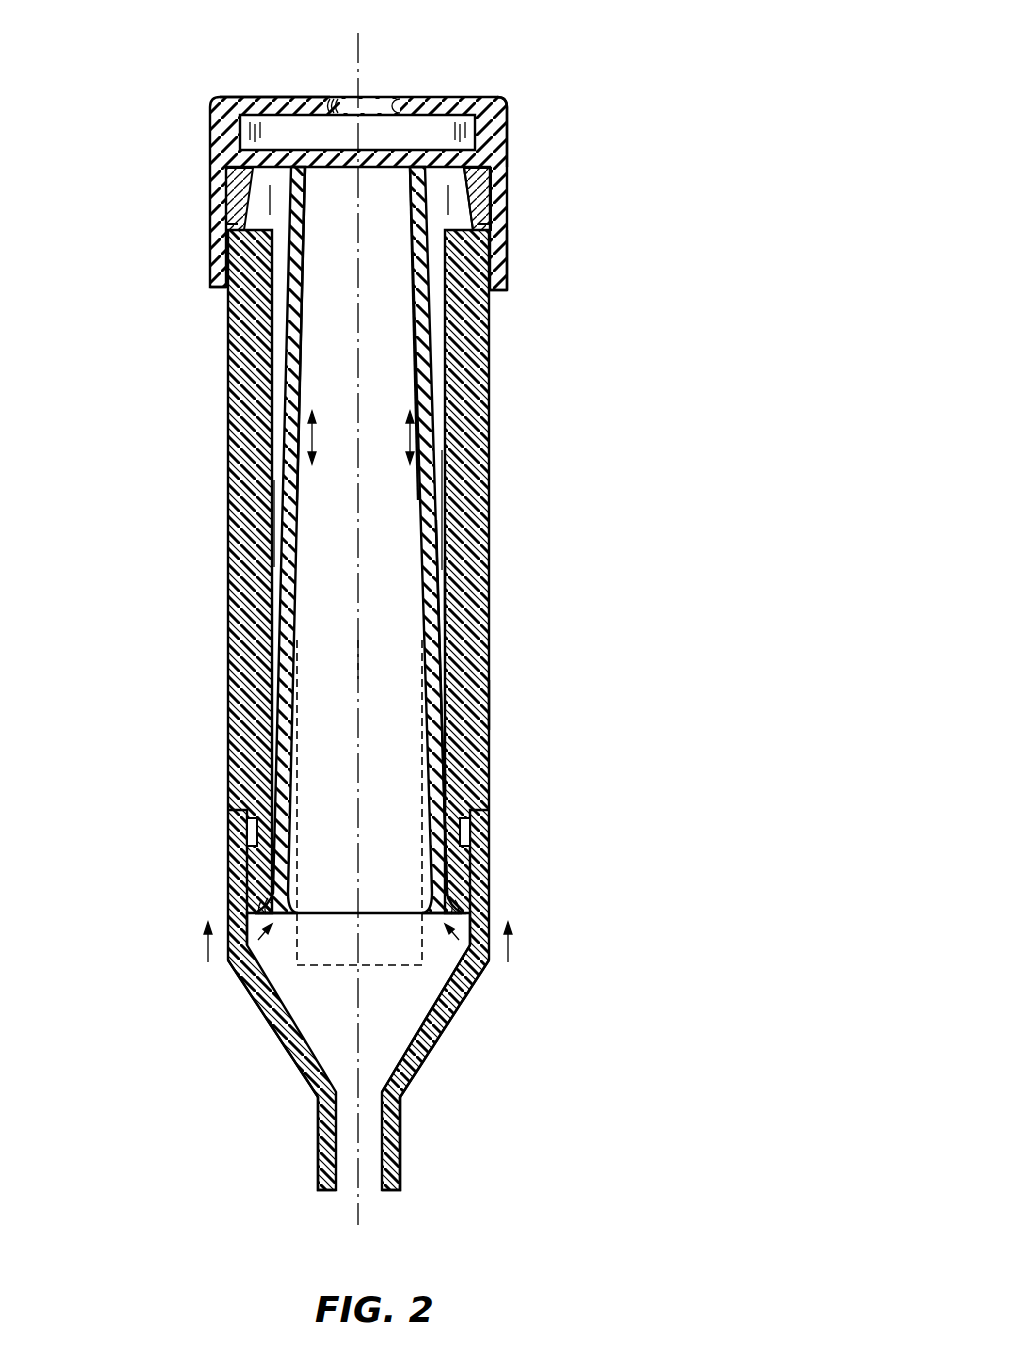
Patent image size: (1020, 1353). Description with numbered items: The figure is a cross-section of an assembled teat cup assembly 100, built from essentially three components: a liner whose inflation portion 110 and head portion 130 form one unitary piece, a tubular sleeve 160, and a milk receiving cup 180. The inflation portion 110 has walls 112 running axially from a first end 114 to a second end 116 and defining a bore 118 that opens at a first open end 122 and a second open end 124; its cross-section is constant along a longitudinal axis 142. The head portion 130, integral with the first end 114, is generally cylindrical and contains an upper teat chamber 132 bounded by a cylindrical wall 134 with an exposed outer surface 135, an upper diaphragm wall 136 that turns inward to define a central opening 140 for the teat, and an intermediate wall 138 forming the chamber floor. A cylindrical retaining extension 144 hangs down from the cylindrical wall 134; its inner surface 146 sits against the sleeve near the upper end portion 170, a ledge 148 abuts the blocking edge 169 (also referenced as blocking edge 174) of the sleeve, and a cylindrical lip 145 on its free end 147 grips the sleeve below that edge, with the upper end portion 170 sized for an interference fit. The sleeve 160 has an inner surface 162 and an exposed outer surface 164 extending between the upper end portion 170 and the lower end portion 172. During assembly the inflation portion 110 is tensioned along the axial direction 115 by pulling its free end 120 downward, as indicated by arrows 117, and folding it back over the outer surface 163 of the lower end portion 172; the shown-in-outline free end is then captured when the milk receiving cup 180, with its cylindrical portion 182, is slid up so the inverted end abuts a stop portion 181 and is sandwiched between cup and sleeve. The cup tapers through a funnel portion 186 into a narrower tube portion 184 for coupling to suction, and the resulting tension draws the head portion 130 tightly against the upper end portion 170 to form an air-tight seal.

The teat cup assembly 100 is at (683, 92).
The inflation portion 110 is at (428, 510).
The wall 112 is at (440, 372).
The first end 114 is at (300, 185).
The axial direction 115 is at (405, 445).
The second end 116 is at (243, 838).
The arrows 117 is at (252, 985).
The bore 118 is at (372, 183).
The free end 120 is at (247, 870).
The first open end 122 is at (405, 160).
The second open end 124 is at (305, 916).
The head portion 130 is at (205, 102).
The upper teat chamber 132 is at (441, 117).
The cylindrical wall 134 is at (500, 117).
The outer surface 135 is at (497, 128).
The upper diaphragm wall 136 is at (265, 100).
The intermediate wall 138 is at (242, 130).
The central opening 140 is at (402, 107).
The longitudinal axis 142 is at (365, 632).
The cylindrical retaining extension 144 is at (468, 200).
The cylindrical lip 145 is at (493, 263).
The inner surface 146 is at (250, 200).
The free end 147 is at (500, 292).
The ledge 148 is at (240, 258).
The tubular sleeve 160 is at (496, 650).
The inner surface 162 is at (446, 590).
The outer surface 163 is at (470, 862).
The outer surface 164 is at (491, 700).
The blocking edge 169 is at (468, 182).
The upper end portion 170 is at (236, 284).
The lower end portion 172 is at (455, 792).
The blocking edge 174 is at (480, 226).
The milk receiving cup 180 is at (458, 1025).
The stop portion 181 is at (240, 812).
The cylindrical portion 182 is at (476, 885).
The tube portion 184 is at (400, 1146).
The funnel portion 186 is at (432, 1060).